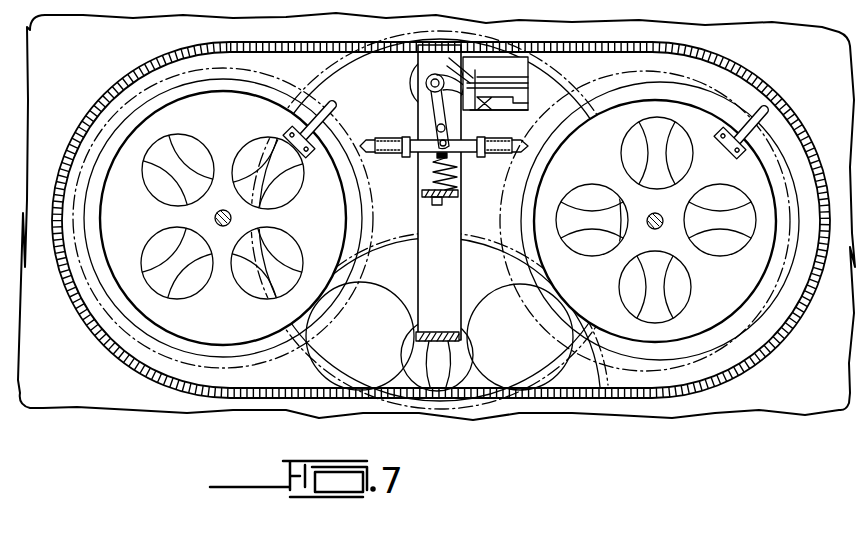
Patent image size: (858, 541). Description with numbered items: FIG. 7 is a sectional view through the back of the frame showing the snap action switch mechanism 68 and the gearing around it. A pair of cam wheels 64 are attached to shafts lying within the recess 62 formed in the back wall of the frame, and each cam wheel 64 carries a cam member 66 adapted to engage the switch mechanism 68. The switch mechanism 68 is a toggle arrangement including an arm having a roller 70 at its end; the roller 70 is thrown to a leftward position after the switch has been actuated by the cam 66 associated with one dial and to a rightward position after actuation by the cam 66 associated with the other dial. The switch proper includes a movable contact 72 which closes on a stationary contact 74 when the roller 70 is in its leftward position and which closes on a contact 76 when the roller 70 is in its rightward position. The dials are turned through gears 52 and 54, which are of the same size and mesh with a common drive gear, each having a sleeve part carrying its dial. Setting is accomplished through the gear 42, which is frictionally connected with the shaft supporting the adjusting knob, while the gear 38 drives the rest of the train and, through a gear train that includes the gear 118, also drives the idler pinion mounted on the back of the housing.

The gear 38 is at (475, 288).
The gear 42 is at (546, 121).
The gear 52 is at (175, 111).
The gear 54 is at (643, 99).
The recess 62 is at (774, 98).
The cam wheel 64 is at (324, 229).
The cam member 66 is at (306, 157).
The snap action switch mechanism 68 is at (473, 152).
The roller 70 is at (427, 86).
The movable contact 72 is at (457, 41).
The stationary contact 74 is at (489, 110).
The contact 76 is at (468, 71).
The gear 118 is at (732, 362).